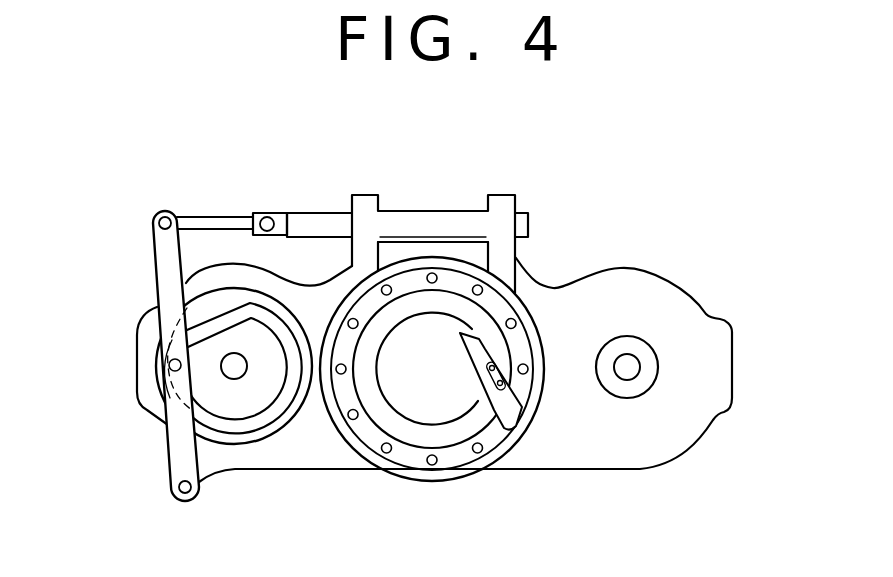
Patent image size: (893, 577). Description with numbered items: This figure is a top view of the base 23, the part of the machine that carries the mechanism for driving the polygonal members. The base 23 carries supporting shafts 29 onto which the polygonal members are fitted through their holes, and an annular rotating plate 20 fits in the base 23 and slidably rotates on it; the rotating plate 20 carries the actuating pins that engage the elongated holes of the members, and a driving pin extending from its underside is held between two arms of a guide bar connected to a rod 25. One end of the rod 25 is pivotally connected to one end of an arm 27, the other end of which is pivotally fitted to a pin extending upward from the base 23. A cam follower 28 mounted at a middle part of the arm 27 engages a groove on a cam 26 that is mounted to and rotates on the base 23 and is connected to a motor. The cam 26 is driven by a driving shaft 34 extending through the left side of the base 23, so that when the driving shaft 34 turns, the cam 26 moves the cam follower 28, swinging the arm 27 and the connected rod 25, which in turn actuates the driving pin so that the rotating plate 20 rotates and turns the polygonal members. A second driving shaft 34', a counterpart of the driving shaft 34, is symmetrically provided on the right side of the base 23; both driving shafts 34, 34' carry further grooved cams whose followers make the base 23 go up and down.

The rotating plate 20 is at (453, 433).
The base 23 is at (137, 393).
The rod 25 is at (428, 212).
The cam 26 is at (260, 442).
The arm 27 is at (155, 272).
The cam follower 28 is at (167, 416).
The supporting shafts 29 is at (433, 466).
The driving shaft 34 is at (286, 456).
The driving shaft 34' is at (685, 322).